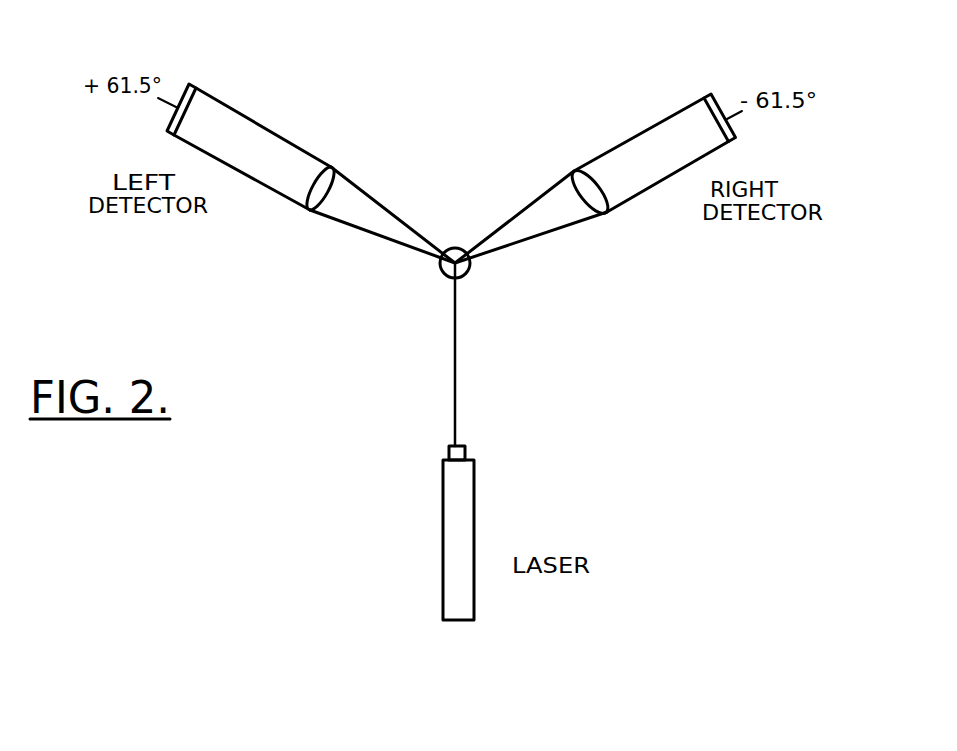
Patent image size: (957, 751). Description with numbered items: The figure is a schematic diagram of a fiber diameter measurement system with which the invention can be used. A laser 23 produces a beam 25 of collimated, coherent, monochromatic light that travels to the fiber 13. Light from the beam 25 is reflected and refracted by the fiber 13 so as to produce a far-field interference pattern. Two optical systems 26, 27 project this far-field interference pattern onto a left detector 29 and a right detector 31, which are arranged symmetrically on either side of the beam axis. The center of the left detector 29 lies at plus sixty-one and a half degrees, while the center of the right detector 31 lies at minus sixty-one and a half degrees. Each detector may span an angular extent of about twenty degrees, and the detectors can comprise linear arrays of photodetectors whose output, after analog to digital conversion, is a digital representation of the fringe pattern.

The fiber 13 is at (455, 263).
The laser 23 is at (463, 513).
The beam 25 is at (459, 377).
The optical system 26 is at (322, 190).
The optical system 27 is at (590, 203).
The left detector 29 is at (195, 92).
The right detector 31 is at (737, 138).